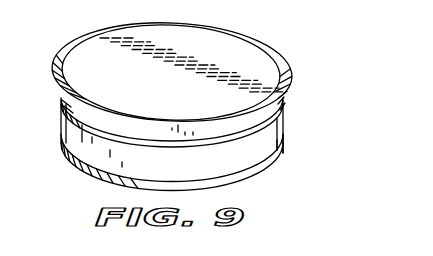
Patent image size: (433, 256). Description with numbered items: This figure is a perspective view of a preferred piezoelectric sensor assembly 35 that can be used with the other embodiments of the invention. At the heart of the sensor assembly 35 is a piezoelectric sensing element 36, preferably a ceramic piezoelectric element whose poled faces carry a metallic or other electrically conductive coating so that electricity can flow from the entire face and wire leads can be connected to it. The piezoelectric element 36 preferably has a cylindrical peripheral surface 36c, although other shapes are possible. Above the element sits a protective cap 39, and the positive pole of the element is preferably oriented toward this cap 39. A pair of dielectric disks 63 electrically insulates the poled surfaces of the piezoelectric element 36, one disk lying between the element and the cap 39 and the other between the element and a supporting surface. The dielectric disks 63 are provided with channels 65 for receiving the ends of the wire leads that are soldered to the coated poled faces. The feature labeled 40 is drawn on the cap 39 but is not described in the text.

The piezoelectric sensor assembly 35 is at (211, 107).
The piezoelectric sensing element 36 is at (272, 131).
The cylindrical peripheral surface 36c is at (83, 166).
The cap 39 is at (233, 37).
The beveled peripheral rim 40 is at (290, 83).
The dielectric disks 63 is at (253, 168).
The channels 65 is at (304, 138).